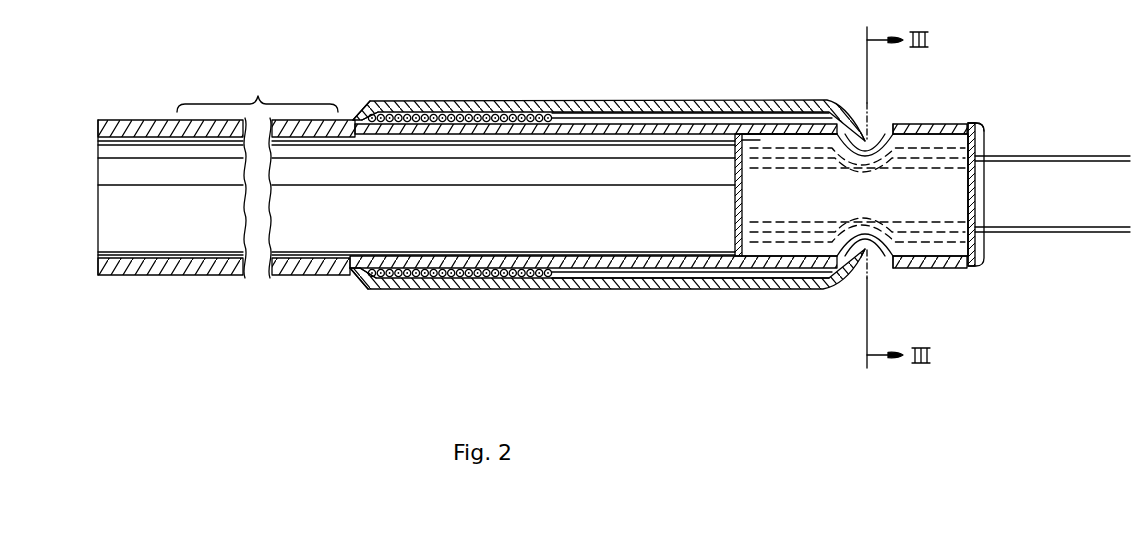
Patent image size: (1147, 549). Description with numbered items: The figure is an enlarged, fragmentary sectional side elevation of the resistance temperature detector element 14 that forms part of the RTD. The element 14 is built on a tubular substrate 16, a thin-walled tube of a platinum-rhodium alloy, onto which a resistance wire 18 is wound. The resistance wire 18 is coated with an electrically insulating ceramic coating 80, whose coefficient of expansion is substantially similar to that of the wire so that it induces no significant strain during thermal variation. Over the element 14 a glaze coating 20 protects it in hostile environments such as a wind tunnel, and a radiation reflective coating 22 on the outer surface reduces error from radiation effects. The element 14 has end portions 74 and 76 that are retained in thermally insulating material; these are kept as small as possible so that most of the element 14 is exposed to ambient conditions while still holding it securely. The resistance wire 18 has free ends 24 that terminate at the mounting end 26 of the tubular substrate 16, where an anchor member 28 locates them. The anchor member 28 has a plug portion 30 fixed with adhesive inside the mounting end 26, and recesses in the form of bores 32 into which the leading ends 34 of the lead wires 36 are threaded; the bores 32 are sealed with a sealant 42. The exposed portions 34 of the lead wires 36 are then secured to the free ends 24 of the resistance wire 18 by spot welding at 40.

The resistance temperature detector element 14 is at (561, 74).
The tubular substrate 16 is at (321, 264).
The resistance wire 18 is at (688, 116).
The glaze coating 20 is at (443, 112).
The radiation reflective coating 22 is at (398, 64).
The free ends 24 is at (866, 138).
The mounting end 26 is at (782, 262).
The anchor member 28 is at (927, 201).
The plug portion 30 is at (770, 138).
The bores 32 is at (962, 145).
The leading ends 34 is at (888, 127).
The lead wires 36 is at (1107, 156).
The spot welding 40 is at (879, 128).
The sealant 42 is at (735, 190).
The end portion 74 is at (80, 139).
The end portion 76 is at (982, 115).
The ceramic coating 80 is at (548, 117).